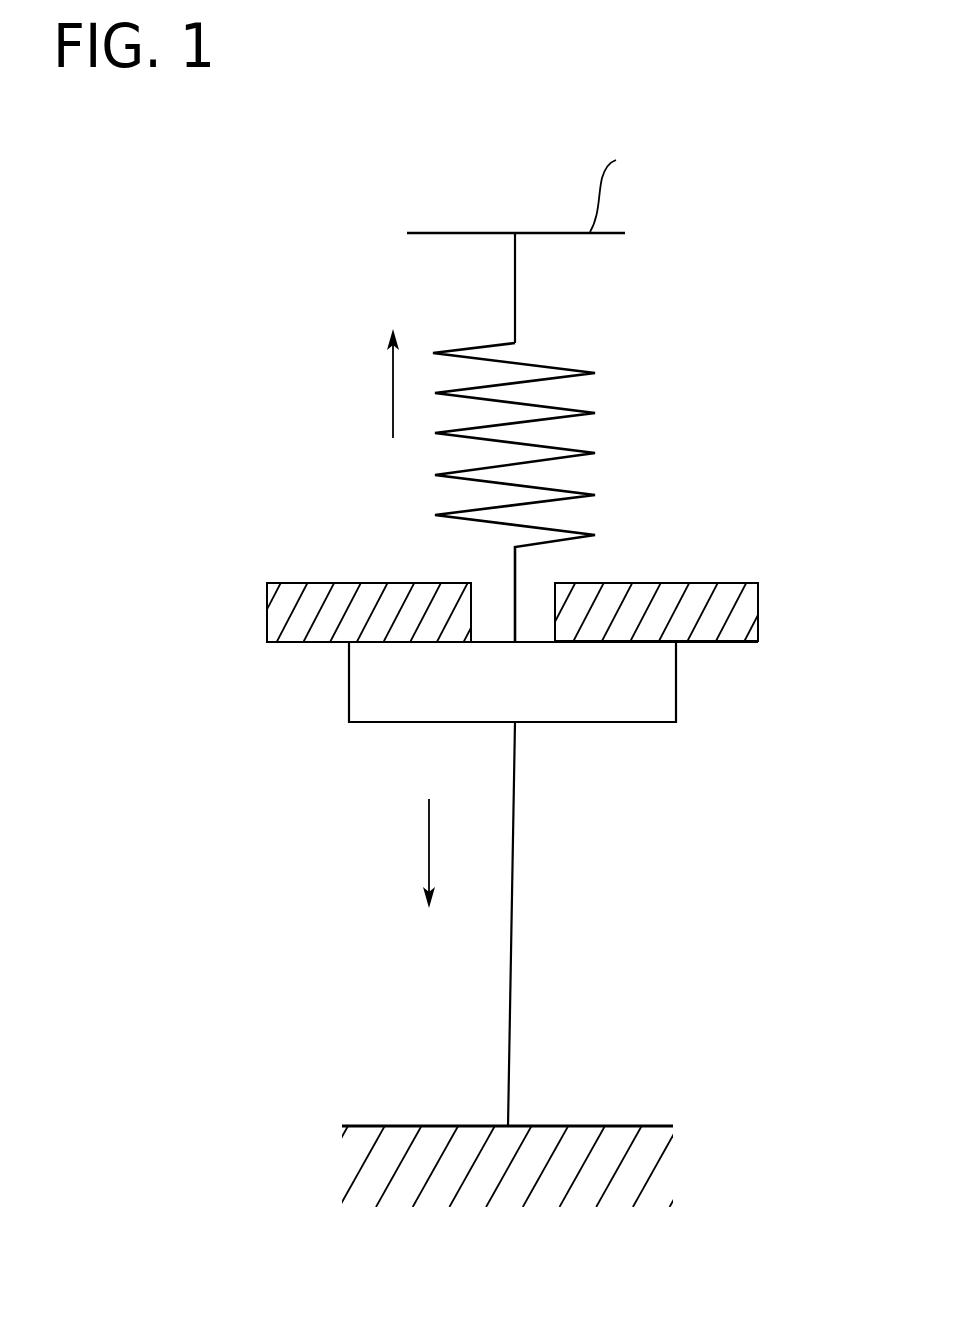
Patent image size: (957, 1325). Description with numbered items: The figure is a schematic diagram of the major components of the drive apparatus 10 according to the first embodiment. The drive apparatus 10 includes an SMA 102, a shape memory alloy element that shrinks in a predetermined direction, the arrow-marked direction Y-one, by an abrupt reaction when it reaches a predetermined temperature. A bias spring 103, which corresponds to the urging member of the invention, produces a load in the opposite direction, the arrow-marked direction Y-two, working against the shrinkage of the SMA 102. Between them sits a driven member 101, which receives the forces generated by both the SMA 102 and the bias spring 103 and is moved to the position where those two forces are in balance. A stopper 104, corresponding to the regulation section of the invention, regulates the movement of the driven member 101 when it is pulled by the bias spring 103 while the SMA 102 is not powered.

The drive apparatus 10 is at (492, 116).
The driven member 101 is at (677, 693).
The SMA 102 is at (513, 840).
The bias spring 103 is at (596, 413).
The stopper 104 is at (759, 608).